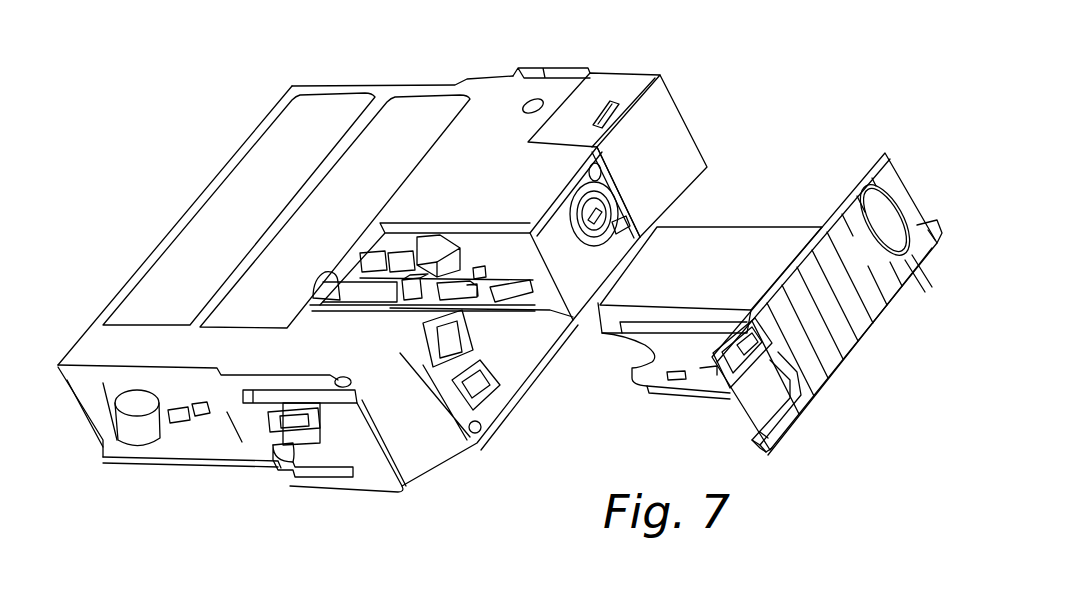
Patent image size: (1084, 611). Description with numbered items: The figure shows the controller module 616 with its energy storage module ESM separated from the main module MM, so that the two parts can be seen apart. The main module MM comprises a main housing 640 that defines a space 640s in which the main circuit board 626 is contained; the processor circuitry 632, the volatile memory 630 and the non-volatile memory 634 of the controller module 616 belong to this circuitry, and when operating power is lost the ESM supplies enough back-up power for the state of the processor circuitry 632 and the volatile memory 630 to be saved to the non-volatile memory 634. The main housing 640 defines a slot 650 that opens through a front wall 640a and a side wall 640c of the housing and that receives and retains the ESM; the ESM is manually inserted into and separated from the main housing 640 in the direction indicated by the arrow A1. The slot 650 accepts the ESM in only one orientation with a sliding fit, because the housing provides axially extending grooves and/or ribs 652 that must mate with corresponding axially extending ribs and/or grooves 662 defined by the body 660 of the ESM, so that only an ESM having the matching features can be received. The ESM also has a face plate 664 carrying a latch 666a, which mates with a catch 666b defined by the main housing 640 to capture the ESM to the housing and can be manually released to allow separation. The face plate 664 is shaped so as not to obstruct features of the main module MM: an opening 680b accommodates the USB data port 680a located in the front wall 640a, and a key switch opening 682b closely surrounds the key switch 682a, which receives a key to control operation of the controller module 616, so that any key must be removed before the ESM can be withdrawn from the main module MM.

The main housing 640 is at (214, 222).
The side wall 640c is at (411, 162).
The front wall 640a is at (563, 205).
The space 640s is at (206, 428).
The volatile memory 630 is at (367, 226).
The processor circuitry 632 is at (340, 272).
The non-volatile memory 634 is at (403, 263).
The main circuit board 626 is at (470, 265).
The mechanical features 652 is at (550, 310).
The slot 650 is at (512, 368).
The catch 666b is at (430, 326).
The USB data port 680a is at (460, 440).
The controller module 616 is at (725, 114).
The key switch 682a is at (606, 210).
The body 660 is at (725, 248).
The mechanical features 662 is at (678, 325).
The face plate 664 is at (860, 330).
The latch 666a is at (763, 350).
The opening 680b is at (773, 400).
The key switch opening 682b is at (910, 195).
The main module MM is at (615, 65).
The energy storage module ESM is at (796, 214).
The arrow A1 is at (620, 405).